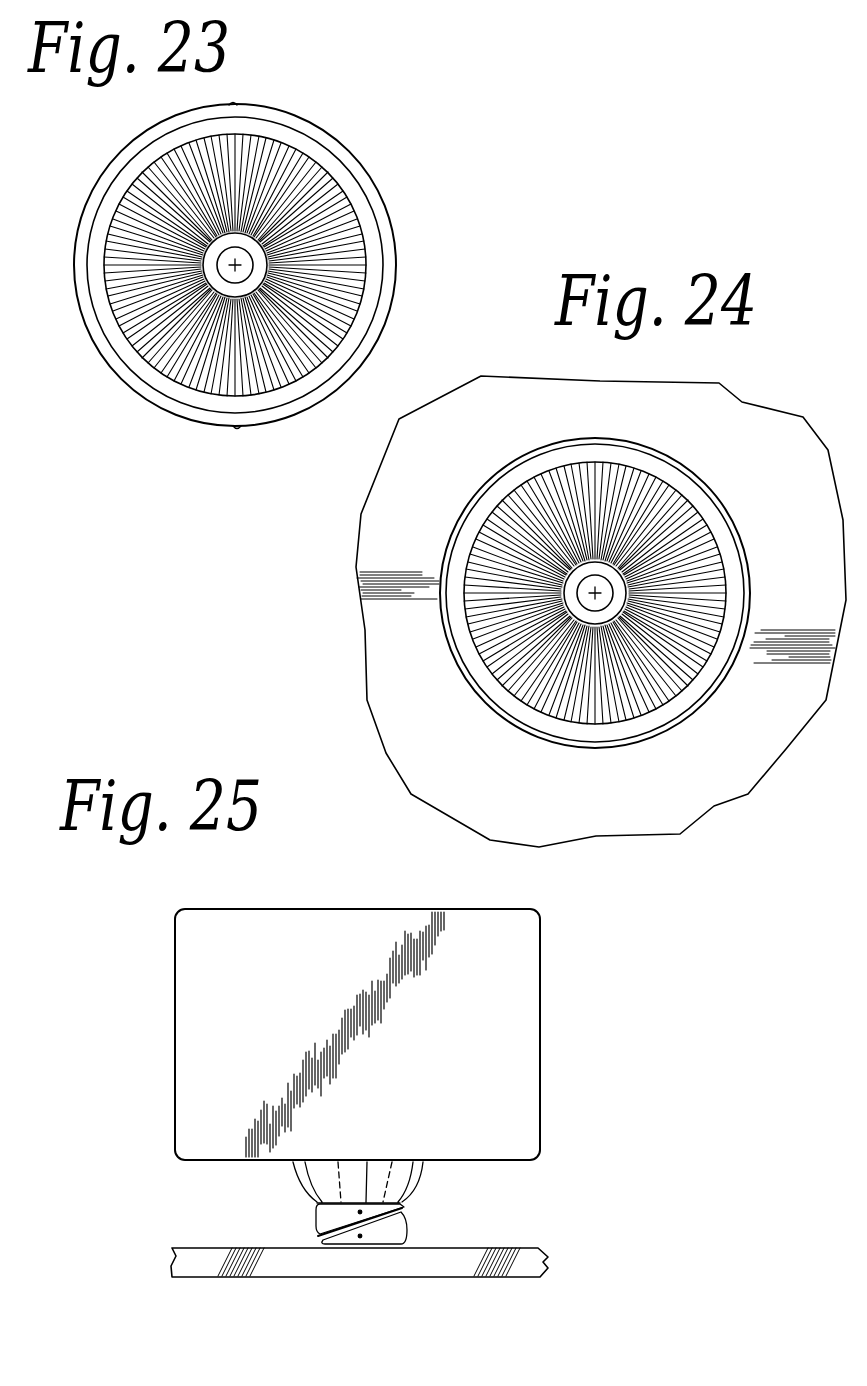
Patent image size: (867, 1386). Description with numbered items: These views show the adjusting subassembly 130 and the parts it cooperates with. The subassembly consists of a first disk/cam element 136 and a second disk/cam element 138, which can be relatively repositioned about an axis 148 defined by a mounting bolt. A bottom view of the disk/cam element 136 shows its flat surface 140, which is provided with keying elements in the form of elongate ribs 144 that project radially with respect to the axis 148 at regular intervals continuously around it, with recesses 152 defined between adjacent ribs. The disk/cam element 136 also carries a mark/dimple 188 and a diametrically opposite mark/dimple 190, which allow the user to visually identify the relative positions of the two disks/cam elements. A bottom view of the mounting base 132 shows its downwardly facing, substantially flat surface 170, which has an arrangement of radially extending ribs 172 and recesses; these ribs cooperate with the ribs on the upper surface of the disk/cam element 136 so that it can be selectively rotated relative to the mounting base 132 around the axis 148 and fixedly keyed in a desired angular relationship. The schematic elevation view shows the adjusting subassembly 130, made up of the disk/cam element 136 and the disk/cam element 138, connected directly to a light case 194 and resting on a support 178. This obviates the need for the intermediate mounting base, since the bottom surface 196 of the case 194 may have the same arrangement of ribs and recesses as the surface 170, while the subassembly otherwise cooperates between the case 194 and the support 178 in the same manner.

In FIG. 25, the adjusting subassembly 130 is at (447, 1205).
In FIG. 24, the mounting base 132 is at (383, 664).
In FIG. 23, the first disk/cam element 136 is at (397, 287).
In FIG. 25, the first disk/cam element 136 is at (313, 1215).
In FIG. 25, the second disk/cam element 138 is at (408, 1232).
In FIG. 23, the flat surface 140 is at (318, 306).
In FIG. 23, the elongate ribs 144 is at (347, 212).
In FIG. 23, the axis 148 is at (237, 262).
In FIG. 24, the axis 148 is at (597, 590).
In FIG. 23, the recesses 152 is at (353, 220).
In FIG. 24, the flat surface 170 is at (693, 518).
In FIG. 24, the radially extending ribs 172 is at (719, 537).
In FIG. 25, the support 178 is at (405, 1267).
In FIG. 23, the mark/dimple 188 is at (233, 104).
In FIG. 23, the mark/dimple 190 is at (237, 428).
In FIG. 25, the light case 194 is at (355, 930).
In FIG. 25, the bottom surface 196 is at (318, 1236).